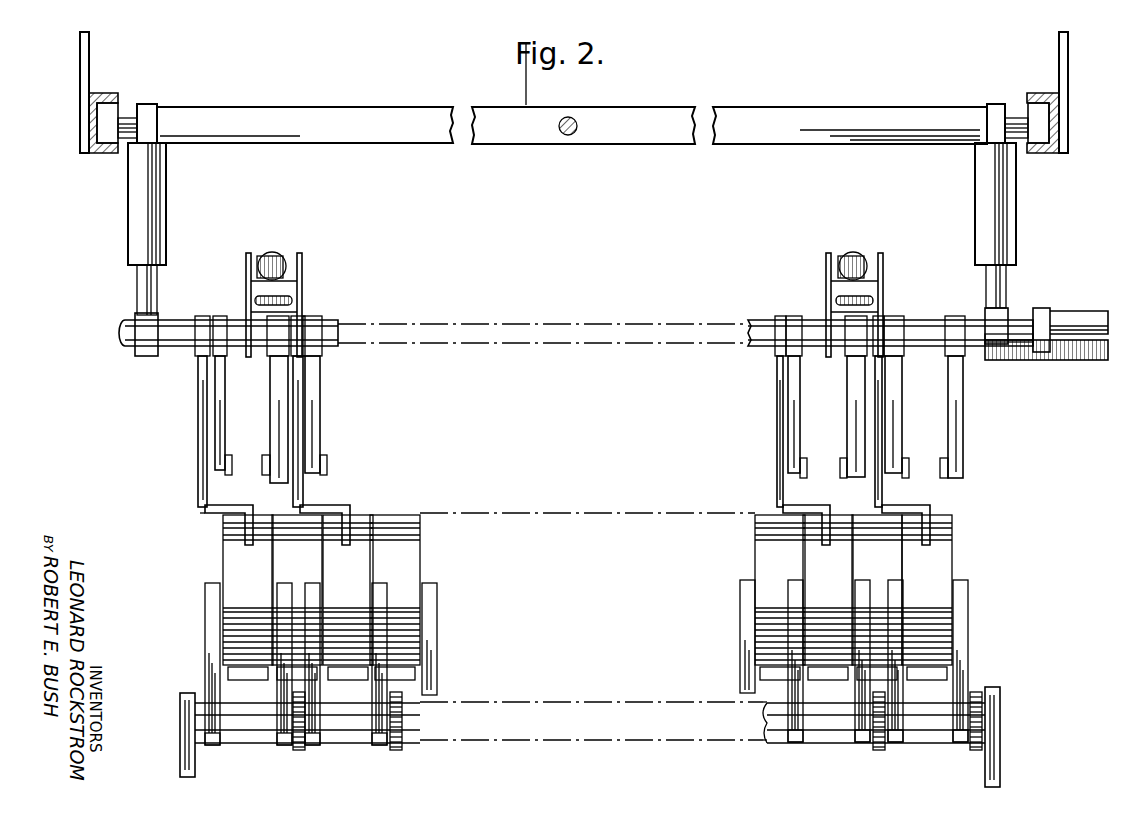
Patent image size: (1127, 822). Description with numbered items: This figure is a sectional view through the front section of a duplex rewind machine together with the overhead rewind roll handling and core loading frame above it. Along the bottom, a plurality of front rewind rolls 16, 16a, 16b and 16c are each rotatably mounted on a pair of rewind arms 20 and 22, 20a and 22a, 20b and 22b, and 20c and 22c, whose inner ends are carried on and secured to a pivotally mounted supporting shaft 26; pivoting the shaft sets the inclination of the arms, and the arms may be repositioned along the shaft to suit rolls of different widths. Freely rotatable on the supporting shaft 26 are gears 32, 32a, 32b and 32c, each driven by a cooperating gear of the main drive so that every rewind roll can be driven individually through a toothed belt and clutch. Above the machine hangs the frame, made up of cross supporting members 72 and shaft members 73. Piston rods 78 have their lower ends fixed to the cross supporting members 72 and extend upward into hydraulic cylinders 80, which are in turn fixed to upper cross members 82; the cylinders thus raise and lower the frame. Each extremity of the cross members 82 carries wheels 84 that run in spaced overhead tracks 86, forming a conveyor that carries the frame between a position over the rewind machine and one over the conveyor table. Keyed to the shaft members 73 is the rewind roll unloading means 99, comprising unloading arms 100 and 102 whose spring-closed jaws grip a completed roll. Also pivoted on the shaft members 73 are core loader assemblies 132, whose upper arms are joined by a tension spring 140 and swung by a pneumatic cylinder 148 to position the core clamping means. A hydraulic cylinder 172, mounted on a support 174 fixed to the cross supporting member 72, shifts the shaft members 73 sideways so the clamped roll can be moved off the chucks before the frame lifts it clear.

The front rewind roll 16 is at (940, 558).
The front rewind roll 16a is at (812, 562).
The front rewind roll 16b is at (352, 563).
The front rewind roll 16c is at (232, 561).
The rewind arm 20 is at (961, 620).
The rewind arm 20a is at (860, 716).
The rewind arm 20b is at (380, 680).
The rewind arm 20c is at (282, 690).
The rewind arm 22 is at (894, 736).
The rewind arm 22a is at (790, 726).
The rewind arm 22b is at (310, 690).
The rewind arm 22c is at (215, 673).
The supporting shaft 26 is at (578, 740).
The gear 32 is at (984, 739).
The gear 32a is at (880, 752).
The gear 32b is at (398, 752).
The gear 32c is at (300, 752).
The cross supporting member 72 is at (988, 355).
The shaft member 73 is at (566, 288).
The piston rod 78 is at (141, 292).
The hydraulic cylinder 80 is at (158, 205).
The cross member 82 is at (796, 120).
The wheel 84 is at (118, 110).
The overhead track 86 is at (92, 104).
The rewind roll unloading means 99 is at (270, 426).
The rewind roll unloading arm 100 is at (964, 442).
The rewind roll unloading arm 102 is at (892, 412).
The core loader assembly 132 is at (198, 462).
The tension spring 140 is at (288, 298).
The pneumatic cylinder 148 is at (258, 258).
The hydraulic cylinder 172 is at (1096, 310).
The support 174 is at (1072, 360).